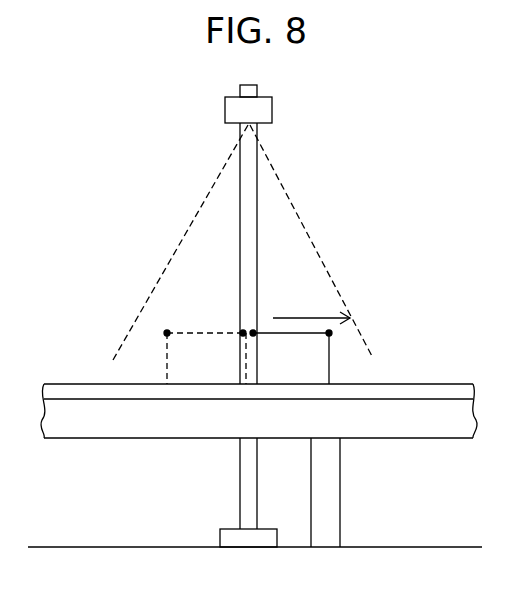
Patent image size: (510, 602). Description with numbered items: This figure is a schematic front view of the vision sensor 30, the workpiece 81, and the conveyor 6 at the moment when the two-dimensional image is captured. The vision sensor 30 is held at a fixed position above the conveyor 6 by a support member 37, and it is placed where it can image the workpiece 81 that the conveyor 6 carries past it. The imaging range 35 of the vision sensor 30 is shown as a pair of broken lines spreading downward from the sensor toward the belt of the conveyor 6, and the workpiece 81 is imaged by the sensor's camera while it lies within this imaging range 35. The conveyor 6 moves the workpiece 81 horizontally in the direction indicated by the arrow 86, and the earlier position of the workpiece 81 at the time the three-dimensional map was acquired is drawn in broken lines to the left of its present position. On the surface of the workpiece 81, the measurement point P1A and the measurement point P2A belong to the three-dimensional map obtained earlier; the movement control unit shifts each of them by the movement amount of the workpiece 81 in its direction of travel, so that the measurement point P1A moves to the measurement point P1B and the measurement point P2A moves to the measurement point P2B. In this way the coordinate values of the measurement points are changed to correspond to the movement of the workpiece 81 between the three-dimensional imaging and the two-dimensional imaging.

The conveyor 6 is at (63, 428).
The vision sensor 30 is at (263, 108).
The imaging range 35 is at (292, 205).
The support member 37 is at (248, 495).
The workpiece 81 is at (329, 358).
The arrow 86 is at (312, 318).
The measurement point P1A is at (243, 333).
The measurement point P1B is at (329, 333).
The measurement point P2A is at (167, 333).
The measurement point P2B is at (253, 333).